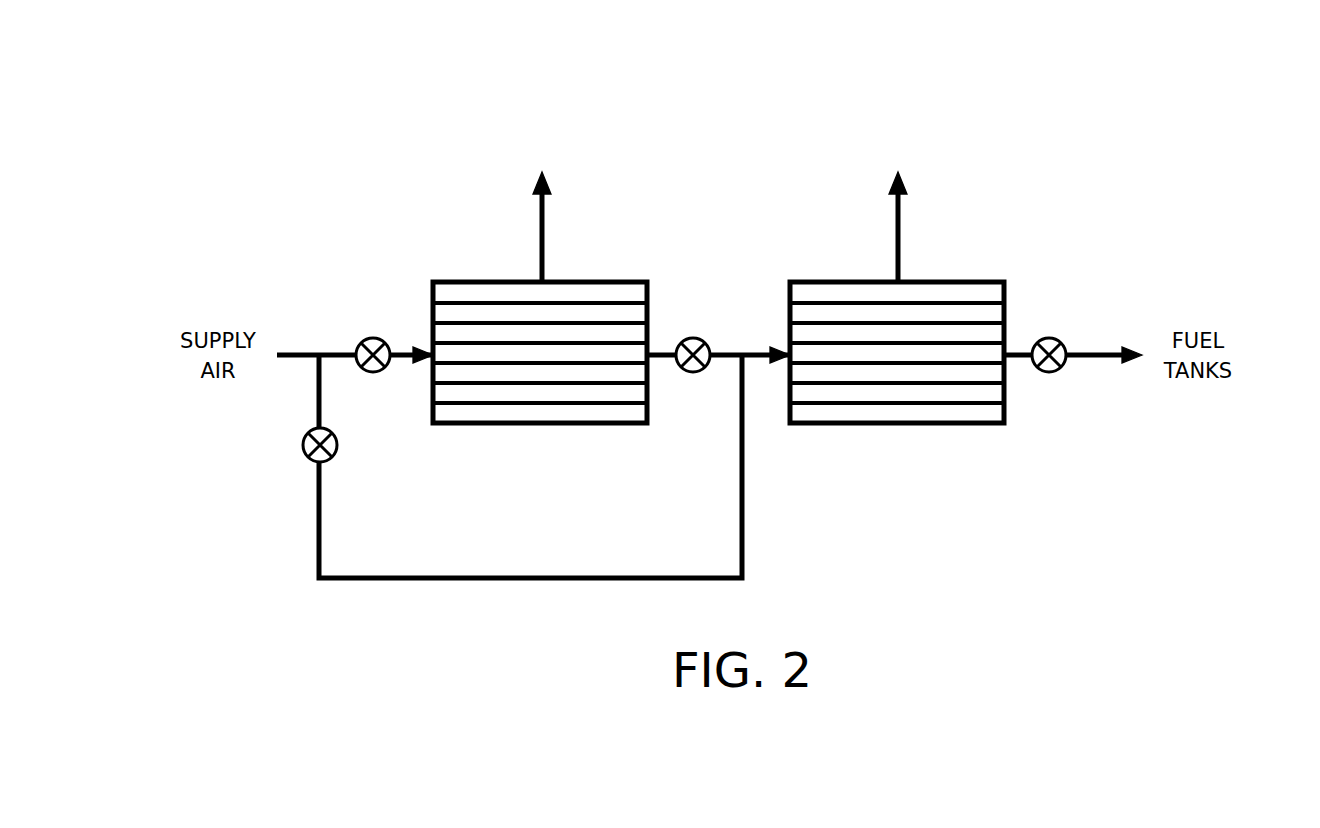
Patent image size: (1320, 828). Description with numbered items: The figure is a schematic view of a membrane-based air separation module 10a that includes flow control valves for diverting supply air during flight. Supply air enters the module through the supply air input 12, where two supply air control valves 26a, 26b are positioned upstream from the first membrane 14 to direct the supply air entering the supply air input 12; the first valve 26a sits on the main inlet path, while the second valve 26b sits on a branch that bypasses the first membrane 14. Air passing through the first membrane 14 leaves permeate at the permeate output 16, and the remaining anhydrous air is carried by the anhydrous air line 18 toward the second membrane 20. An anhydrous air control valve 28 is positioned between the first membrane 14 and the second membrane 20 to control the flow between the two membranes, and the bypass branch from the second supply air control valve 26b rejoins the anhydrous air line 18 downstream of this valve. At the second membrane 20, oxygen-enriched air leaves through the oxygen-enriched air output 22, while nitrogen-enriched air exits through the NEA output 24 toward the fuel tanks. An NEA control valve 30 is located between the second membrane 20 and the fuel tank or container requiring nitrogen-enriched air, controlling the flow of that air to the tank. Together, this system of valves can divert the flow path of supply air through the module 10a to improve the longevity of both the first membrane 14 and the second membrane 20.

The air separation module 10a is at (297, 117).
The supply air input 12 is at (335, 355).
The first membrane 14 is at (540, 424).
The permeate output 16 is at (547, 221).
The anhydrous air line 18 is at (758, 350).
The second membrane 20 is at (898, 424).
The oxygen-enriched air output 22 is at (900, 229).
The NEA output 24 is at (1015, 355).
The supply air control valve 26a is at (378, 338).
The supply air control valve 26b is at (302, 445).
The anhydrous air control valve 28 is at (692, 338).
The NEA control valve 30 is at (1057, 369).